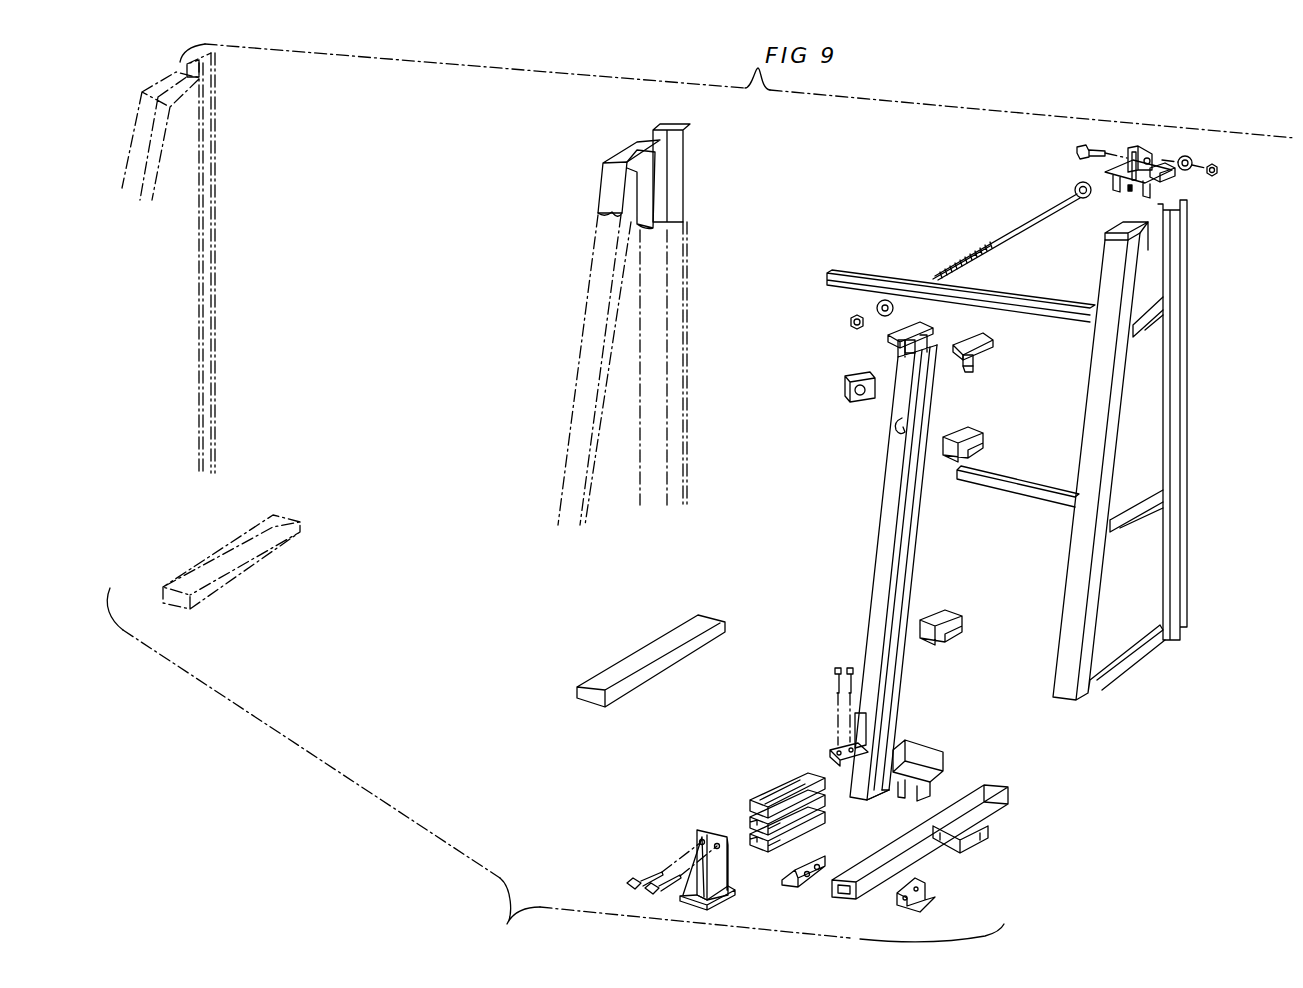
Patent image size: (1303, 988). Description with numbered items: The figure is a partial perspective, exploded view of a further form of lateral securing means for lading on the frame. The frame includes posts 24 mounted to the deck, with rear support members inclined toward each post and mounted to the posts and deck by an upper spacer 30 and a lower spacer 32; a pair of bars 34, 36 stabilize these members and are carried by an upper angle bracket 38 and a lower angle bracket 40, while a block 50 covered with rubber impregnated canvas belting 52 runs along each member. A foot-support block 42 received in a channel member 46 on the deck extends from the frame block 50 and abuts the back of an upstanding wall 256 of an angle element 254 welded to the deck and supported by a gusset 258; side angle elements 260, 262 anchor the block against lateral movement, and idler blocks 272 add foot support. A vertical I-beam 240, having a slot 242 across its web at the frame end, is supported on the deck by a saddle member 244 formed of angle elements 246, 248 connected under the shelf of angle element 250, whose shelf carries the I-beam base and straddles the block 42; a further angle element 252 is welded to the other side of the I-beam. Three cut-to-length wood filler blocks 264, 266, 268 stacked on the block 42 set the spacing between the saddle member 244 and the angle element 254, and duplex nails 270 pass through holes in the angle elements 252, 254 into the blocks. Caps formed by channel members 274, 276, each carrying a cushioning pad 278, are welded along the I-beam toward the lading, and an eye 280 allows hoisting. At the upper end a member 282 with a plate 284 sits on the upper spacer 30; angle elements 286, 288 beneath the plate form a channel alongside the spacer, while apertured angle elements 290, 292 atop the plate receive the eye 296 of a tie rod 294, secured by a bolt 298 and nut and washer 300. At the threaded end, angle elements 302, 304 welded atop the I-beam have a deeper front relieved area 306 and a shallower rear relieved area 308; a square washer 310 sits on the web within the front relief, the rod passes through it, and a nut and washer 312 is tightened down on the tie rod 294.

The post 24 is at (213, 268).
The upper spacer 30 is at (655, 150).
The lower spacer 32 is at (1143, 655).
The bar 34 is at (1157, 320).
The bar 36 is at (1160, 500).
The upper angle bracket 38 is at (1030, 303).
The lower angle bracket 40 is at (1000, 470).
The block 42 is at (922, 853).
The channel member 46 is at (990, 822).
The block 50 is at (623, 180).
The rubber impregnated canvas belting 52 is at (608, 202).
The I-beam 240 is at (915, 533).
The slot 242 is at (900, 349).
The saddle member 244 is at (945, 760).
The angle element 246 is at (830, 810).
The angle element 248 is at (885, 808).
The angle element 250 is at (915, 760).
The angle element 252 is at (840, 748).
The angle element 254 is at (730, 878).
The upstanding wall 256 is at (709, 860).
The gusset 258 is at (680, 890).
The side angle element 260 is at (803, 884).
The side angle element 262 is at (925, 900).
The wood filler block 264 is at (795, 827).
The wood filler block 266 is at (752, 808).
The wood filler block 268 is at (795, 778).
The duplex nail 270 is at (836, 668).
The idler block 272 is at (247, 566).
The channel member 274 is at (960, 650).
The channel member 276 is at (945, 440).
The cushioning pad 278 is at (975, 436).
The eye 280 is at (893, 428).
The member 282 is at (1128, 190).
The plate 284 is at (1122, 168).
The angle element 286 is at (1105, 174).
The angle element 288 is at (1168, 181).
The angle element 290 is at (1135, 150).
The angle element 292 is at (1153, 158).
The tie rod 294 is at (1013, 242).
The eye 296 is at (1073, 189).
The bolt 298 is at (1080, 150).
The nut and washer 300 is at (1214, 164).
The angle element 302 is at (928, 336).
The angle element 304 is at (995, 343).
The relieved area 306 is at (953, 367).
The relieved area 308 is at (848, 323).
The square washer 310 is at (862, 400).
The nut and washer 312 is at (875, 310).